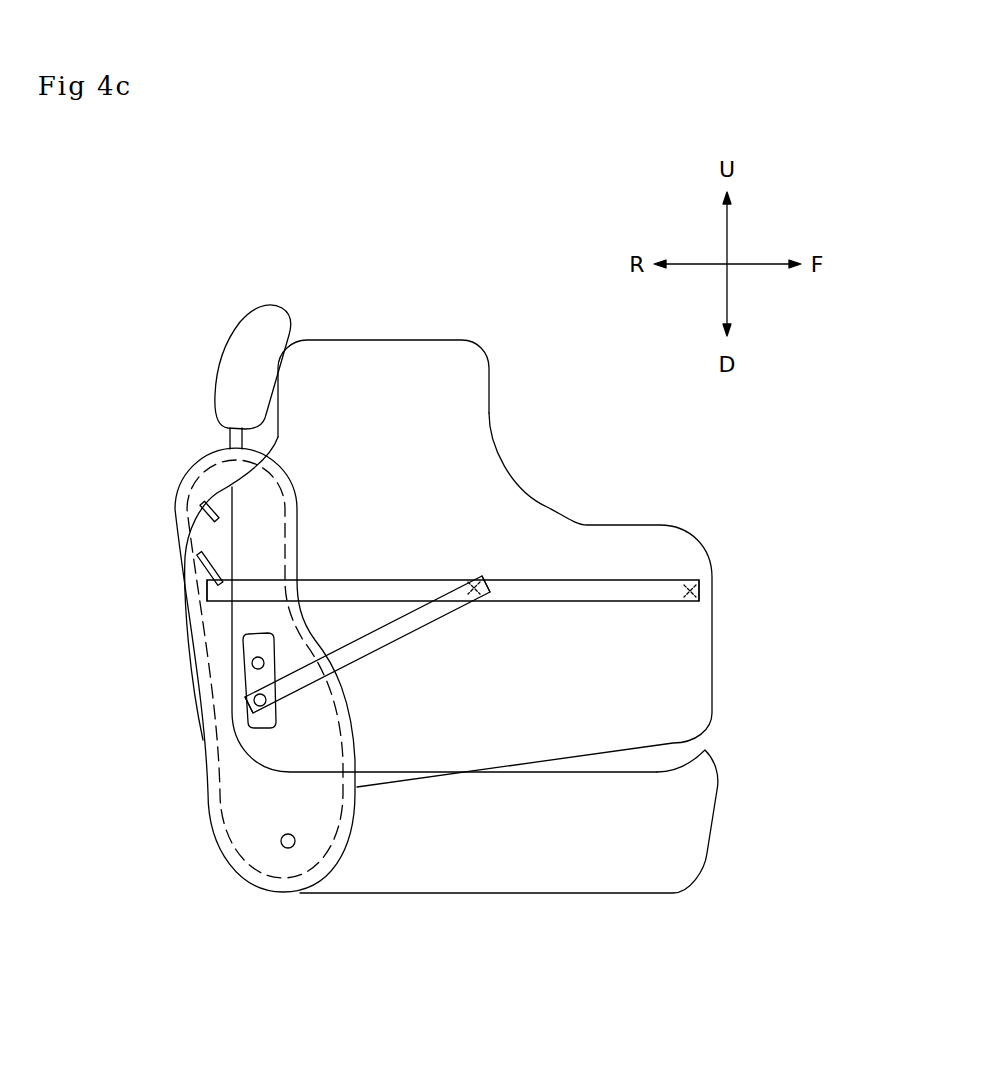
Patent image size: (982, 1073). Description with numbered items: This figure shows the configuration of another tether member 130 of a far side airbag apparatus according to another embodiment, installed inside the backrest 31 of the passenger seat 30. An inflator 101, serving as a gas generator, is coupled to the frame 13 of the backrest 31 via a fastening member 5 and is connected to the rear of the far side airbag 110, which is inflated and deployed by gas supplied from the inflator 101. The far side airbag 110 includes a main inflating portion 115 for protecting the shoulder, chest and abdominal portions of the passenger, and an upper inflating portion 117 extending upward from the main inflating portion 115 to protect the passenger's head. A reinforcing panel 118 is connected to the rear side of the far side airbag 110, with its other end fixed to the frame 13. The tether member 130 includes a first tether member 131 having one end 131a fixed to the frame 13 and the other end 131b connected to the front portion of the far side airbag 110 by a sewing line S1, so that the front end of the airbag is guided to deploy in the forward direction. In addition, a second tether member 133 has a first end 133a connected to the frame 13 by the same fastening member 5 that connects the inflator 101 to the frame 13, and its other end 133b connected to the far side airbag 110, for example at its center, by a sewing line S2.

The fastening member 5 is at (262, 700).
The frame 13 is at (194, 573).
The passenger seat 30 is at (224, 636).
The backrest 31 is at (175, 537).
The inflator 101 is at (181, 712).
The far side airbag 110 is at (399, 501).
The main inflating portion 115 is at (465, 644).
The upper inflating portion 117 is at (428, 377).
The reinforcing panel 118 is at (217, 633).
The tether member 130 is at (432, 745).
The first tether member 131 is at (432, 771).
The one end of the first tether member 131a is at (208, 603).
The other end of the first tether member 131b is at (699, 591).
The second tether member 133 is at (380, 715).
The first end of the second tether member 133a is at (320, 674).
The other end of the second tether member 133b is at (480, 577).
The sewing line S1 is at (690, 583).
The sewing line S2 is at (467, 583).